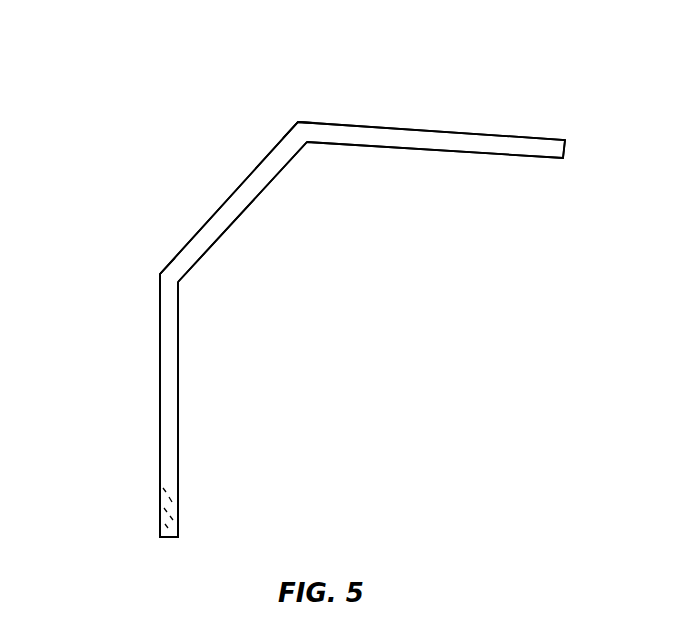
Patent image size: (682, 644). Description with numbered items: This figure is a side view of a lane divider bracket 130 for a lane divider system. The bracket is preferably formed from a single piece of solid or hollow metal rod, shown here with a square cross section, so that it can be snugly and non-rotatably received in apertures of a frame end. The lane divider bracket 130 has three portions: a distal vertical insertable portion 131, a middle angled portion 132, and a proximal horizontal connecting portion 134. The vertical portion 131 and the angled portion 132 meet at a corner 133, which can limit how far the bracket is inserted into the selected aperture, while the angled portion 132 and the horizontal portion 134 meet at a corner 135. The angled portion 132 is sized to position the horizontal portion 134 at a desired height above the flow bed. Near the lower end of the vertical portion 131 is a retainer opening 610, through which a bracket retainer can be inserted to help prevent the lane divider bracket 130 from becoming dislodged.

The lane divider bracket 130 is at (197, 150).
The vertical portion 131 is at (178, 475).
The angled portion 132 is at (238, 217).
The corner 133 is at (158, 274).
The horizontal portion 134 is at (465, 133).
The corner 135 is at (293, 116).
The retainer opening 610 is at (160, 483).